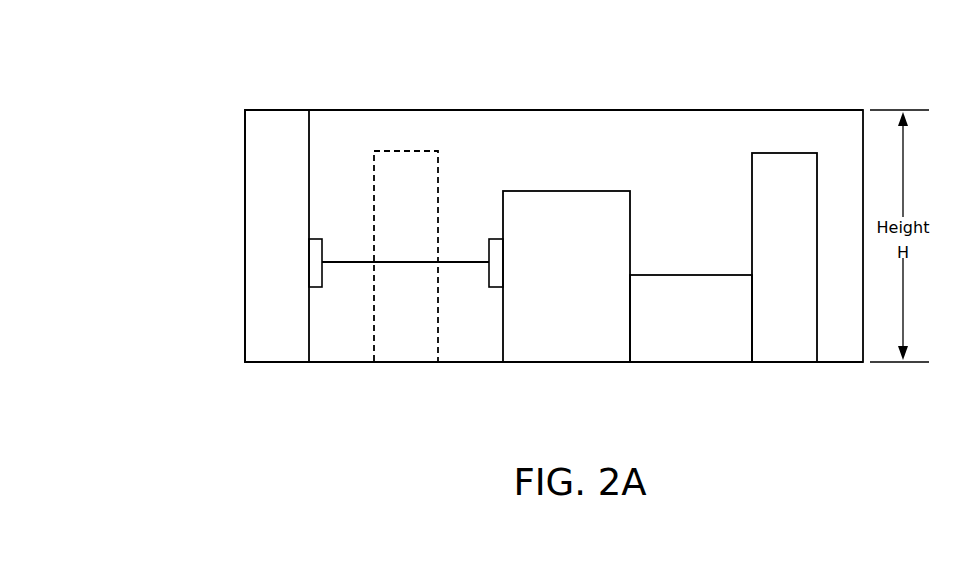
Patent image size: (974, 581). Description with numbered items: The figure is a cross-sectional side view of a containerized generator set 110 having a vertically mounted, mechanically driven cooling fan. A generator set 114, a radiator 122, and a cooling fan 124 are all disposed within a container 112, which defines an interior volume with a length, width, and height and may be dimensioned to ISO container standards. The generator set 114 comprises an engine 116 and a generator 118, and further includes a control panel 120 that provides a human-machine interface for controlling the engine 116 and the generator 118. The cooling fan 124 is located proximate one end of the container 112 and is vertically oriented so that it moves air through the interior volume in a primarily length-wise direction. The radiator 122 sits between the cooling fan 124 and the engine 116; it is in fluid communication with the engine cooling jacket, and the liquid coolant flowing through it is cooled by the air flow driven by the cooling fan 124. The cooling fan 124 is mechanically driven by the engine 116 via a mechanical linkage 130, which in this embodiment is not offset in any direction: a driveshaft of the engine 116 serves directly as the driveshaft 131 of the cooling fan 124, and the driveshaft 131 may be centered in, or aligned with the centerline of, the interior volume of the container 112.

The containerized generator set 110 is at (814, 72).
The container 112 is at (839, 364).
The generator set 114 is at (614, 82).
The engine 116 is at (566, 276).
The generator 118 is at (691, 318).
The control panel 120 is at (775, 352).
The radiator 122 is at (416, 165).
The cooling fan 124 is at (282, 122).
The mechanical linkage 130 is at (462, 280).
The driveshaft 131 is at (449, 261).